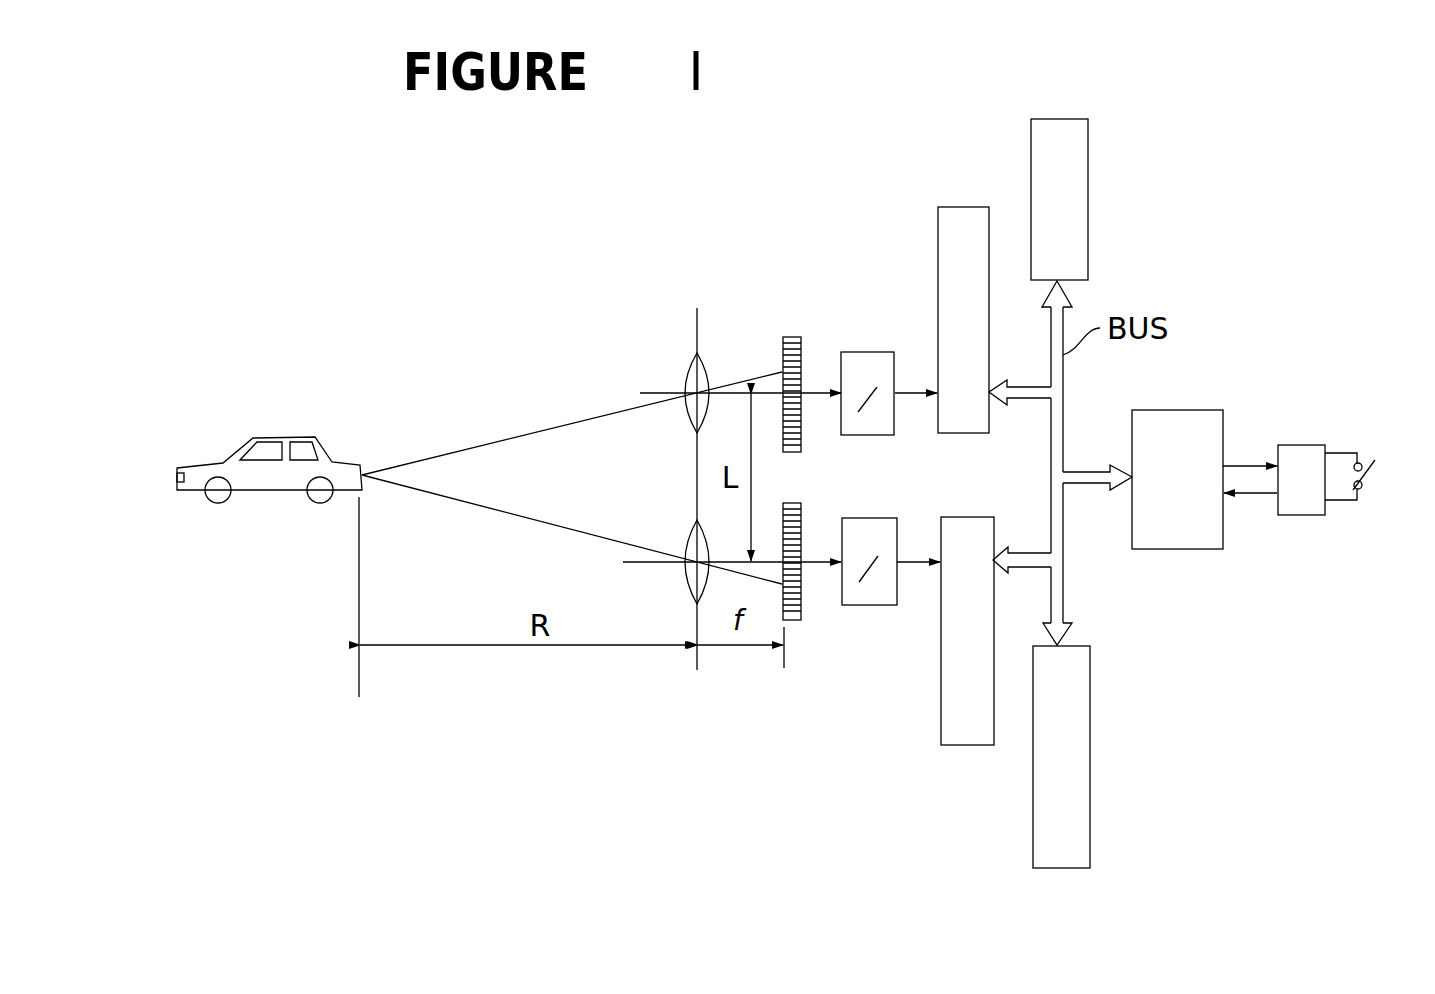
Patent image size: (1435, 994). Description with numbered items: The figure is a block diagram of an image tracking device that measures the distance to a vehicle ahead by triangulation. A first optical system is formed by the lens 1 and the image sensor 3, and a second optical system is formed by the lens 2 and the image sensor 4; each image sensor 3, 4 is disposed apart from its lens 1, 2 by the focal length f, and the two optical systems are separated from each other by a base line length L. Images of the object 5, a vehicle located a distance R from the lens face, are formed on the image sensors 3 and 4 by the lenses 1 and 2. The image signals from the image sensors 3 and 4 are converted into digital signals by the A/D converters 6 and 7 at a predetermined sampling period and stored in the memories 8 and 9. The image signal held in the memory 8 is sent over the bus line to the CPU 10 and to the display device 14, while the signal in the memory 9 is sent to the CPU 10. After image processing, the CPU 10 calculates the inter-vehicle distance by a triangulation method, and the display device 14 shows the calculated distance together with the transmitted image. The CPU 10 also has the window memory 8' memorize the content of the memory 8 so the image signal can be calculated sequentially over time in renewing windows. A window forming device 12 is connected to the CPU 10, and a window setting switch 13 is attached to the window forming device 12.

The lens 1 is at (690, 540).
The lens 2 is at (690, 368).
The image sensor 3 is at (797, 622).
The image sensor 4 is at (793, 337).
The object 5 is at (297, 437).
The A/D converter 6 is at (857, 607).
The A/D converter 7 is at (872, 352).
The memory 8 is at (932, 631).
The window memory 8' is at (1092, 757).
The memory 9 is at (938, 245).
The CPU 10 is at (1183, 549).
The window forming device 12 is at (1290, 515).
The window setting switch 13 is at (1372, 478).
The display device 14 is at (1088, 148).